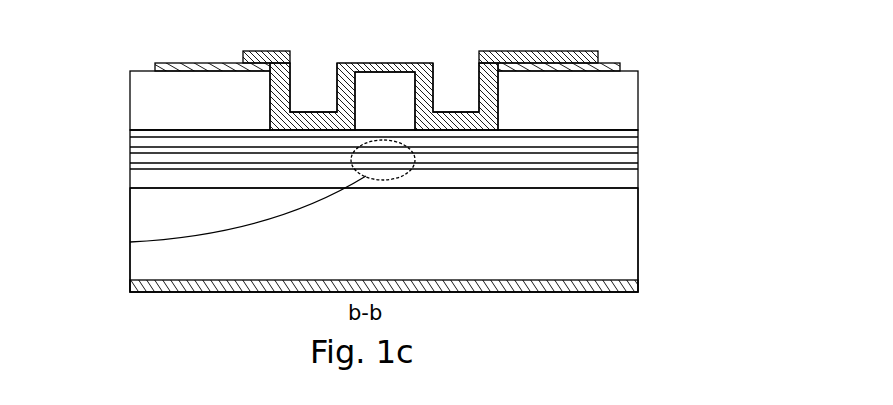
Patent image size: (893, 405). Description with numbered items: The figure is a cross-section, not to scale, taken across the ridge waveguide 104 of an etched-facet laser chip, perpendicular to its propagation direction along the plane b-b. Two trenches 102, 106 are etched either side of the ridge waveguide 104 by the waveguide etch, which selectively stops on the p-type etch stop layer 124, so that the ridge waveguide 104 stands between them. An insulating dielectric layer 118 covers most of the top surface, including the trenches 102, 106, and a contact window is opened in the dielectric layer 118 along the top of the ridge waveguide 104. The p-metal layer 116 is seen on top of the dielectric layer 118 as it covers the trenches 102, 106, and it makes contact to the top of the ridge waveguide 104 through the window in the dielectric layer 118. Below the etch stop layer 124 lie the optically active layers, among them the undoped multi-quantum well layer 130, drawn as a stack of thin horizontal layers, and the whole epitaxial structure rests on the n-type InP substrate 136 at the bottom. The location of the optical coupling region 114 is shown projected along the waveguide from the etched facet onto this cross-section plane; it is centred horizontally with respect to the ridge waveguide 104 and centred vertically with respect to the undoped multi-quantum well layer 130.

The trench 102 is at (330, 96).
The ridge waveguide 104 is at (404, 108).
The trench 106 is at (476, 97).
The optical coupling region 114 is at (130, 242).
The p-metal layer 116 is at (263, 51).
The dielectric layer 118 is at (190, 63).
The p-type etch stop layer 124 is at (137, 135).
The undoped multi-quantum well layer 130 is at (137, 158).
The n-type InP substrate 136 is at (628, 225).